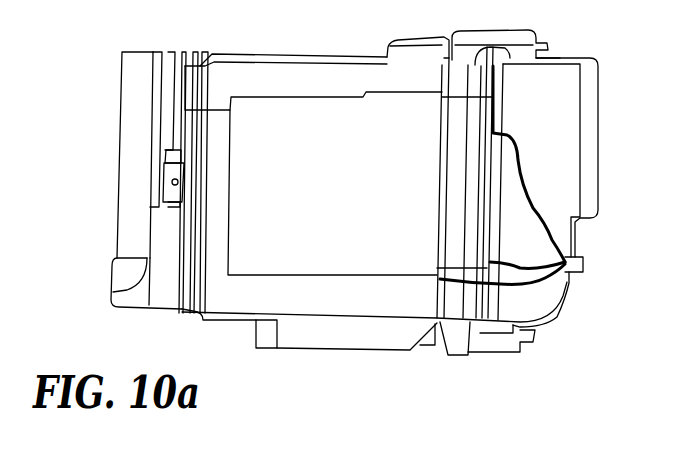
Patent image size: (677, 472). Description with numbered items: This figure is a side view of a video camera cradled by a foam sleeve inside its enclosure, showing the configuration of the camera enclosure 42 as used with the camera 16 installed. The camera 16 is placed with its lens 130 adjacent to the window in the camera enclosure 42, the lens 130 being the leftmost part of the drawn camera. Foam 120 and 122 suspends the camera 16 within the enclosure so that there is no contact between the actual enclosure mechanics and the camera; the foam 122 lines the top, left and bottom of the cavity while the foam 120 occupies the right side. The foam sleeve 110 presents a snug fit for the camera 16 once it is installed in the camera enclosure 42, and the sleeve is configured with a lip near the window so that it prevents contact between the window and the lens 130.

The camera 16 is at (263, 238).
The camera enclosure 42 is at (353, 62).
The foam sleeve 110 is at (552, 100).
The foam 120 is at (562, 181).
The foam 122 is at (308, 80).
The lens 130 is at (218, 128).